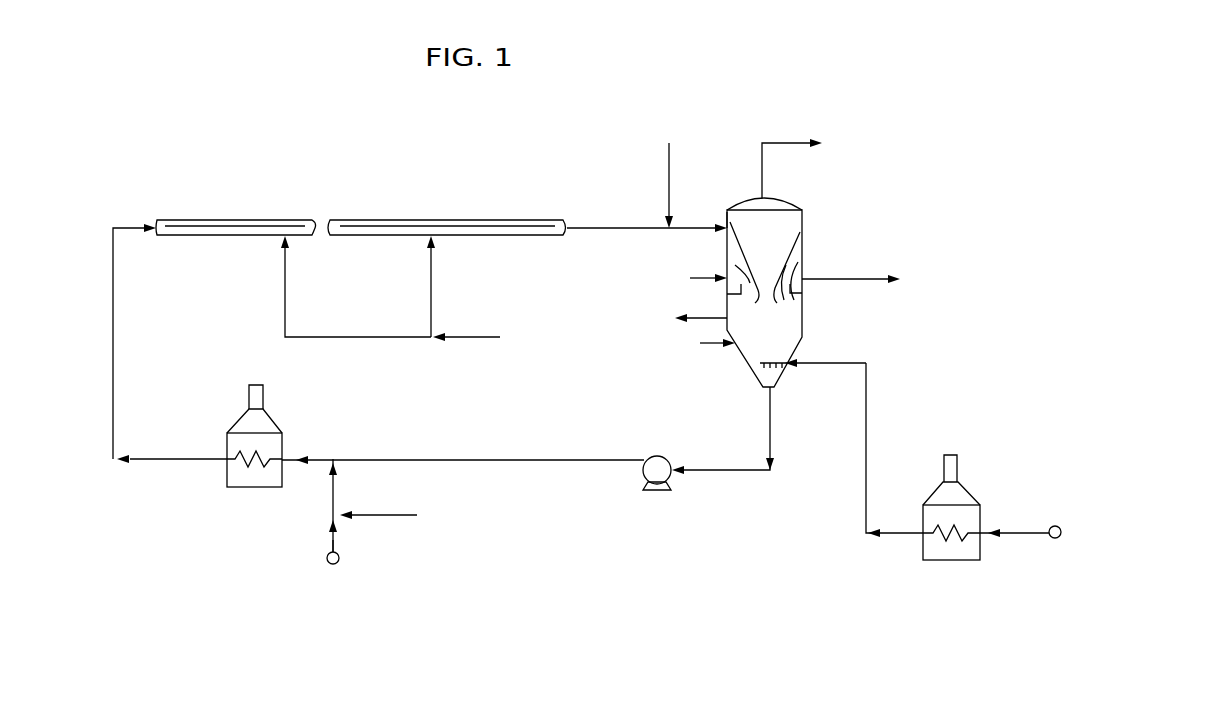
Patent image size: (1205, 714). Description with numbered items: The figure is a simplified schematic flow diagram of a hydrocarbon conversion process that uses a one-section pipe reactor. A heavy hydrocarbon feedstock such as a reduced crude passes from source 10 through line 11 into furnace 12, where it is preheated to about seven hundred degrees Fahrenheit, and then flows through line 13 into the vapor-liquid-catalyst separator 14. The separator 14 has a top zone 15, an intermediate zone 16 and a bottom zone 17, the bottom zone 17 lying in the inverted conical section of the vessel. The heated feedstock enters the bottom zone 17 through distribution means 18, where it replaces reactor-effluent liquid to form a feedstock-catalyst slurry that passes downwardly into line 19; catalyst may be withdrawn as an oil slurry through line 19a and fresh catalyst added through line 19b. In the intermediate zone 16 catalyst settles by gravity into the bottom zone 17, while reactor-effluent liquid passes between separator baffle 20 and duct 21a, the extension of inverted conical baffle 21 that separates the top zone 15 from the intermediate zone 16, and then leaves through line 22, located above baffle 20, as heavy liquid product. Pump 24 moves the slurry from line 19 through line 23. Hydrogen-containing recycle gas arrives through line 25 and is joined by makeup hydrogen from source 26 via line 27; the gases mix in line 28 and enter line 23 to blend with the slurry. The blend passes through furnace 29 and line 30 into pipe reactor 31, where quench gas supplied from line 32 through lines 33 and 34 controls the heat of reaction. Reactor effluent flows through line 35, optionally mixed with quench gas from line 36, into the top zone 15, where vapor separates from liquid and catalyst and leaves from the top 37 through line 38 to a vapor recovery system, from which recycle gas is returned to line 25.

The source 10 is at (1058, 526).
The line 11 is at (1018, 530).
The furnace 12 is at (1010, 468).
The line 13 is at (866, 430).
The vapor-liquid-catalyst separator 14 is at (690, 278).
The top zone 15 is at (727, 218).
The intermediate zone 16 is at (790, 280).
The bottom zone 17 is at (800, 358).
The distribution means 18 is at (766, 360).
The line 19 is at (770, 420).
The line 19a is at (705, 318).
The line 19b is at (718, 345).
The separator baffle 20 is at (727, 294).
The inverted conical baffle 21 is at (745, 262).
The duct 21a is at (738, 268).
The line 22 is at (850, 278).
The line 23 is at (550, 456).
The pump 24 is at (655, 457).
The line 25 is at (392, 514).
The makeup hydrogen source 26 is at (327, 560).
The line 27 is at (333, 548).
The line 28 is at (333, 495).
The furnace 29 is at (237, 417).
The line 30 is at (113, 380).
The pipe reactor 31 is at (515, 218).
The line 32 is at (480, 340).
The line 33 is at (285, 312).
The line 34 is at (431, 310).
The line 35 is at (640, 222).
The line 36 is at (669, 180).
The top 37 is at (772, 199).
The line 38 is at (762, 170).